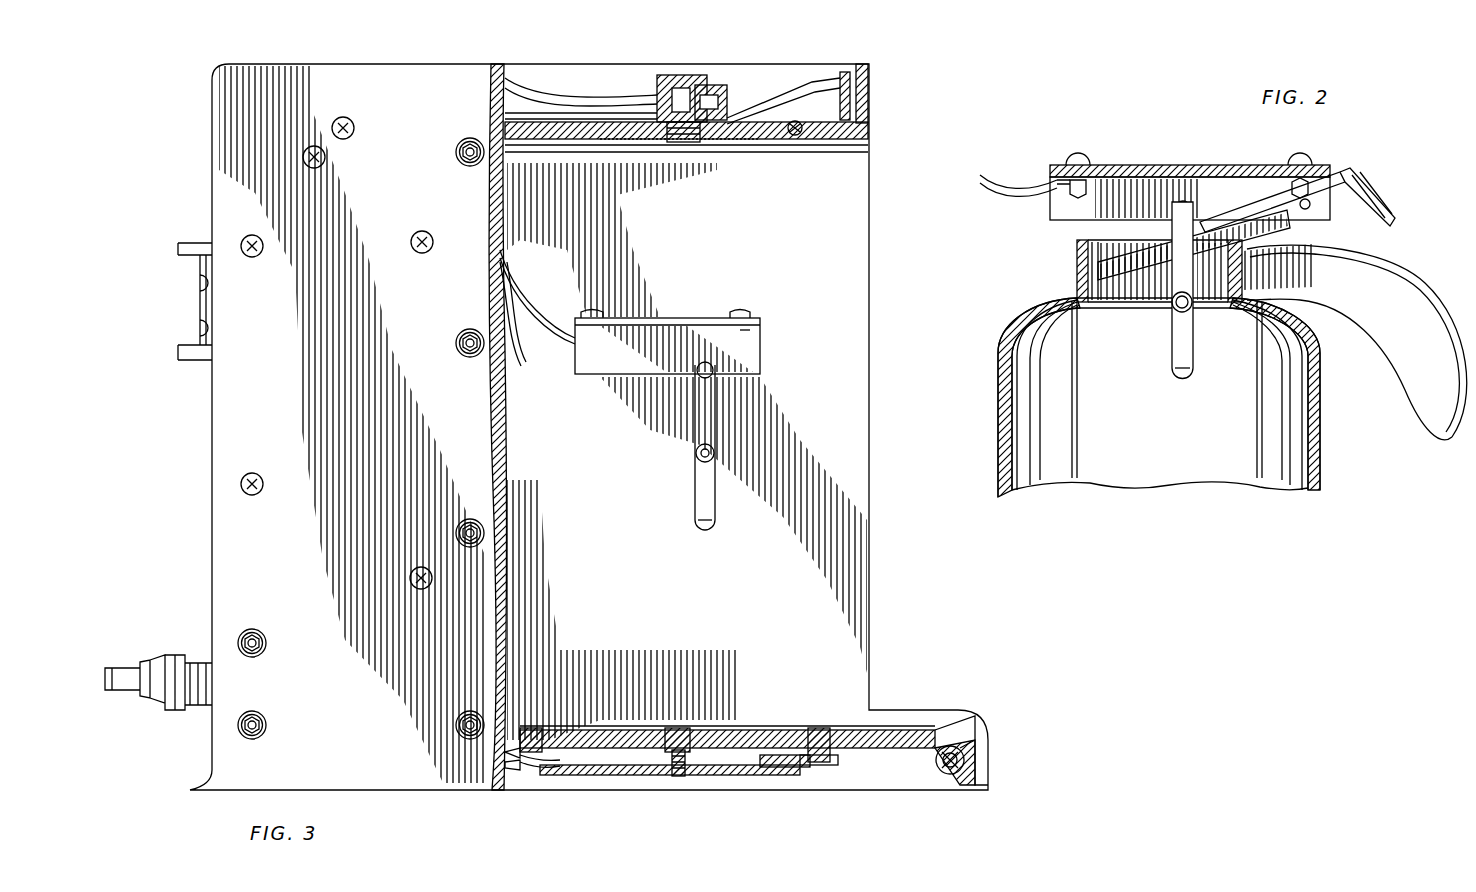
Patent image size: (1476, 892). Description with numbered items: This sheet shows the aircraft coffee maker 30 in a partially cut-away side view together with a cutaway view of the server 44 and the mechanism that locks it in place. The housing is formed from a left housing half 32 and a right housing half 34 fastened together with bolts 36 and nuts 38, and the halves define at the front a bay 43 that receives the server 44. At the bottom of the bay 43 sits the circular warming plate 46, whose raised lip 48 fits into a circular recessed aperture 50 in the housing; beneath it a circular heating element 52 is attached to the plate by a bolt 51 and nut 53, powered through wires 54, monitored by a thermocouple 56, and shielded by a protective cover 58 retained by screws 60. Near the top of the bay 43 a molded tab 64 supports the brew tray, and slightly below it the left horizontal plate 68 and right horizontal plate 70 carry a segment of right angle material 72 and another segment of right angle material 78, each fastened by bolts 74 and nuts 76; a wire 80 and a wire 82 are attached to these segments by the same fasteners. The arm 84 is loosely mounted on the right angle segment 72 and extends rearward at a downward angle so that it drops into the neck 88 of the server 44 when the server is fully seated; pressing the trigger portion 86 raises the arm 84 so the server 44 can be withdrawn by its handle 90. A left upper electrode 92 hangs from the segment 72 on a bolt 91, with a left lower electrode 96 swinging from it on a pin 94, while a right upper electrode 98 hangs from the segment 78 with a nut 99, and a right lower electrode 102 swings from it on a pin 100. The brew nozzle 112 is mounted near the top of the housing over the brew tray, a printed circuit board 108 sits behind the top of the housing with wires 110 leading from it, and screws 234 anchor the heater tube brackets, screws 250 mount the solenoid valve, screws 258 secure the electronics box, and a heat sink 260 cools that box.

In FIG. 3, the aircraft coffee maker 30 is at (222, 792).
In FIG. 3, the left housing half 32 is at (212, 578).
In FIG. 3, the right housing half 34 is at (855, 518).
In FIG. 3, the bolts 36 is at (795, 136).
In FIG. 3, the nuts 38 is at (263, 712).
In FIG. 3, the bay 43 is at (740, 632).
In FIG. 2, the server 44 is at (1338, 430).
In FIG. 3, the circular warming plate 46 is at (615, 730).
In FIG. 3, the raised lip 48 is at (540, 725).
In FIG. 3, the circular recessed aperture 50 is at (812, 745).
In FIG. 3, the bolt 51 is at (690, 725).
In FIG. 3, the circular heating element 52 is at (780, 768).
In FIG. 3, the nut 53 is at (680, 770).
In FIG. 3, the wires 54 is at (545, 770).
In FIG. 3, the thermocouple 56 is at (515, 772).
In FIG. 3, the protective cover 58 is at (630, 775).
In FIG. 3, the screws 60 is at (820, 765).
In FIG. 3, the tab 64 is at (745, 150).
In FIG. 2, the left horizontal plate 68 is at (1215, 165).
In FIG. 3, the right horizontal plate 70 is at (676, 318).
In FIG. 2, the segment of right angle material 72 is at (1058, 222).
In FIG. 3, the bolts 74 is at (745, 300).
In FIG. 2, the bolts 74 is at (1325, 150).
In FIG. 2, the nuts 76 is at (1292, 210).
In FIG. 3, the segment of right angle material 78 is at (752, 335).
In FIG. 3, the wire 80 is at (528, 340).
In FIG. 2, the wire 80 is at (1000, 190).
In FIG. 3, the wire 82 is at (543, 298).
In FIG. 2, the arm 84 is at (1140, 268).
In FIG. 2, the trigger portion 86 is at (1375, 205).
In FIG. 2, the neck 88 is at (1070, 260).
In FIG. 2, the handle 90 is at (1403, 272).
In FIG. 2, the bolt 91 is at (1176, 208).
In FIG. 2, the left upper electrode 92 is at (1202, 258).
In FIG. 2, the pin 94 is at (1176, 306).
In FIG. 2, the left lower electrode 96 is at (1172, 355).
In FIG. 3, the right upper electrode 98 is at (695, 395).
In FIG. 3, the nut 99 is at (697, 366).
In FIG. 3, the pin 100 is at (696, 455).
In FIG. 3, the right lower electrode 102 is at (700, 498).
In FIG. 3, the printed circuit board 108 is at (845, 72).
In FIG. 3, the wires 110 is at (775, 88).
In FIG. 3, the brew nozzle 112 is at (688, 75).
In FIG. 3, the screws 234 is at (410, 602).
In FIG. 3, the screws 250 is at (348, 139).
In FIG. 3, the screws 258 is at (270, 508).
In FIG. 3, the heat sink 260 is at (178, 348).